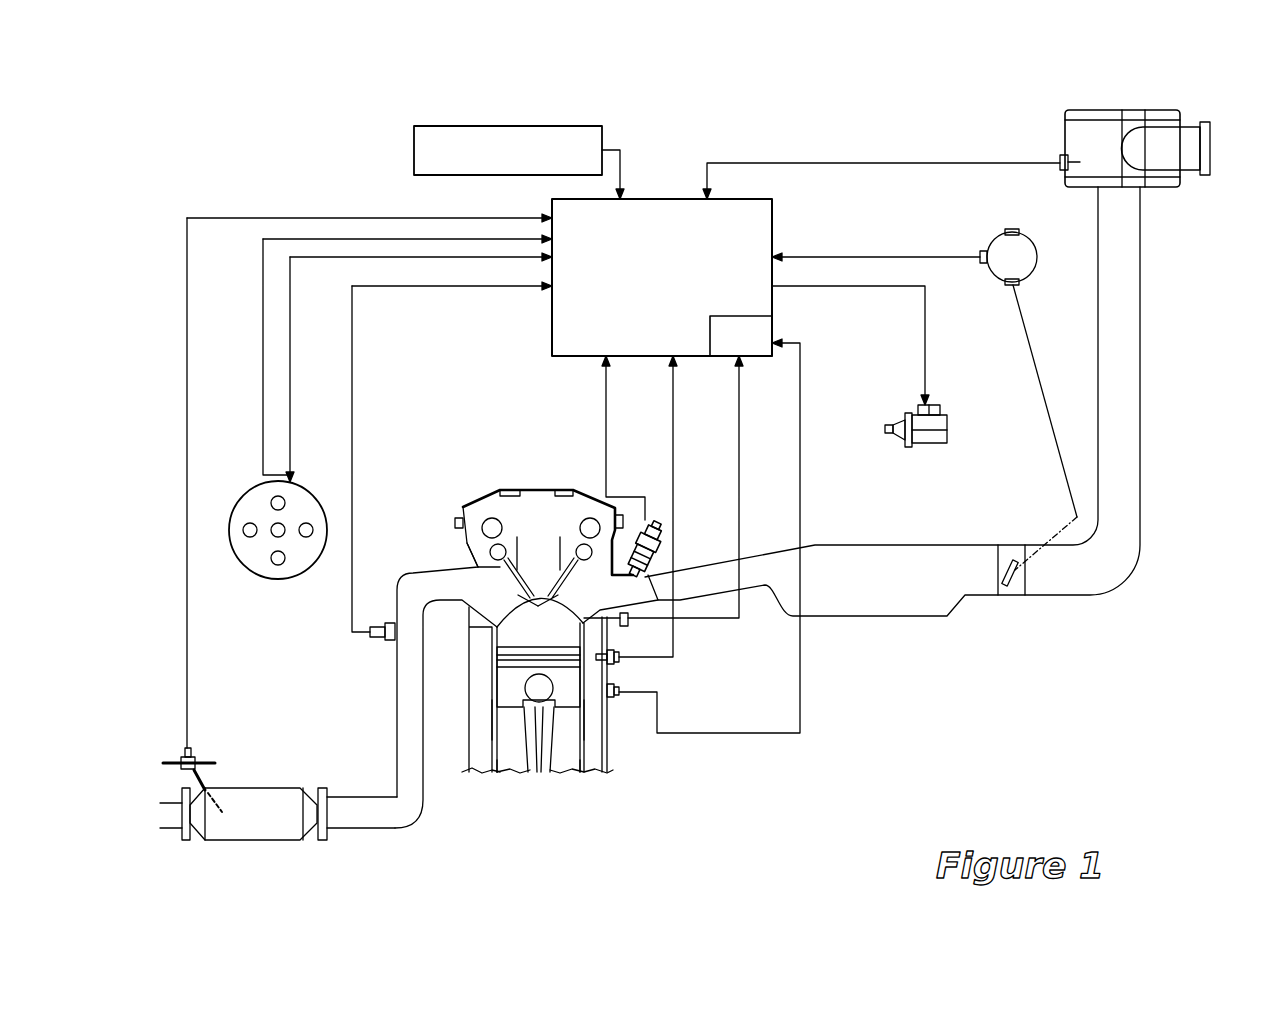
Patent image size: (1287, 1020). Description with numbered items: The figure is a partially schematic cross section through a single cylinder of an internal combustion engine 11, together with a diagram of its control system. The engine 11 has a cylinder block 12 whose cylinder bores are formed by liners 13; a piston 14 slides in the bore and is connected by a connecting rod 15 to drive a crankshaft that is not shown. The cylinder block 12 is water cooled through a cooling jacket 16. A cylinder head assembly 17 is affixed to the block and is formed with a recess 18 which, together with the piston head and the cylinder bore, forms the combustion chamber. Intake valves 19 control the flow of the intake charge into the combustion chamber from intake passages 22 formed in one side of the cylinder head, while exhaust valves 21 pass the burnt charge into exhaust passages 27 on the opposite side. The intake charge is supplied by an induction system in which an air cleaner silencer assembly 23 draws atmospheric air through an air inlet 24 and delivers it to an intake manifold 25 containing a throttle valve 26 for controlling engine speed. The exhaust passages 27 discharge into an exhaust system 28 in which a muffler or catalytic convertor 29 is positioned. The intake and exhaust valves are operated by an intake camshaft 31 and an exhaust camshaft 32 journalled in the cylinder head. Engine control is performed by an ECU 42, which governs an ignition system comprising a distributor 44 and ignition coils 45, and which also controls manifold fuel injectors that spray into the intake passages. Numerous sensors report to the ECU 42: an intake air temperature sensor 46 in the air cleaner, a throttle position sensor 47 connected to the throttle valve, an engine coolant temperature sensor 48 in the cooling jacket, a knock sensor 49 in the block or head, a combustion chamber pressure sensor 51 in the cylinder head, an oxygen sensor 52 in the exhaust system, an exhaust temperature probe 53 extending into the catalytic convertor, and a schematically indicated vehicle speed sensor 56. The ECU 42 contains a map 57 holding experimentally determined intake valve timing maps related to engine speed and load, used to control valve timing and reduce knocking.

The internal combustion engine 11 is at (461, 482).
The cylinder block 12 is at (613, 753).
The liners 13 is at (488, 755).
The pistons 14 is at (510, 695).
The connecting rods 15 is at (537, 760).
The cooling jacket 16 is at (593, 760).
The cylinder head assembly 17 is at (445, 540).
The recess 18 is at (535, 598).
The intake valves 19 is at (562, 773).
The exhaust valves 21 is at (523, 640).
The intake passages 22 is at (638, 590).
The air cleaner silencer assembly 23 is at (1133, 110).
The air inlet 24 is at (1212, 153).
The intake manifold 25 is at (838, 543).
The throttle valve 26 is at (1013, 593).
The exhaust passages 27 is at (480, 593).
The exhaust system 28 is at (397, 810).
The catalytic convertor 29 is at (280, 818).
The intake camshaft 31 is at (592, 518).
The exhaust camshaft 32 is at (488, 518).
The ECU 42 is at (752, 217).
The distributor 44 is at (257, 573).
The ignition coils 45 is at (940, 438).
The intake air temperature sensor 46 is at (1062, 160).
The throttle position sensor 47 is at (1032, 252).
The engine coolant temperature sensor 48 is at (620, 655).
The knock sensor 49 is at (618, 695).
The combustion chamber pressure sensor 51 is at (628, 627).
The oxygen sensor 52 is at (377, 638).
The exhaust temperature probe 53 is at (200, 758).
The vehicle speed sensor 56 is at (488, 127).
The map 57 is at (745, 317).